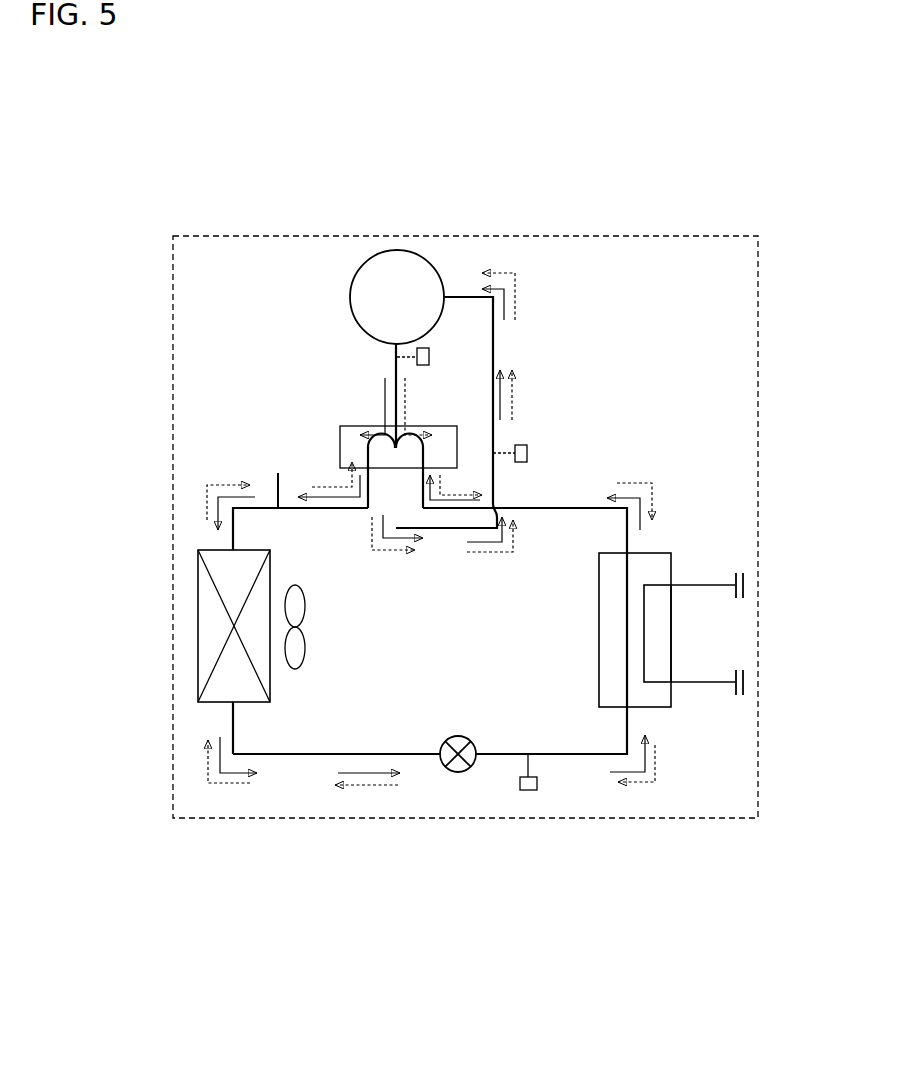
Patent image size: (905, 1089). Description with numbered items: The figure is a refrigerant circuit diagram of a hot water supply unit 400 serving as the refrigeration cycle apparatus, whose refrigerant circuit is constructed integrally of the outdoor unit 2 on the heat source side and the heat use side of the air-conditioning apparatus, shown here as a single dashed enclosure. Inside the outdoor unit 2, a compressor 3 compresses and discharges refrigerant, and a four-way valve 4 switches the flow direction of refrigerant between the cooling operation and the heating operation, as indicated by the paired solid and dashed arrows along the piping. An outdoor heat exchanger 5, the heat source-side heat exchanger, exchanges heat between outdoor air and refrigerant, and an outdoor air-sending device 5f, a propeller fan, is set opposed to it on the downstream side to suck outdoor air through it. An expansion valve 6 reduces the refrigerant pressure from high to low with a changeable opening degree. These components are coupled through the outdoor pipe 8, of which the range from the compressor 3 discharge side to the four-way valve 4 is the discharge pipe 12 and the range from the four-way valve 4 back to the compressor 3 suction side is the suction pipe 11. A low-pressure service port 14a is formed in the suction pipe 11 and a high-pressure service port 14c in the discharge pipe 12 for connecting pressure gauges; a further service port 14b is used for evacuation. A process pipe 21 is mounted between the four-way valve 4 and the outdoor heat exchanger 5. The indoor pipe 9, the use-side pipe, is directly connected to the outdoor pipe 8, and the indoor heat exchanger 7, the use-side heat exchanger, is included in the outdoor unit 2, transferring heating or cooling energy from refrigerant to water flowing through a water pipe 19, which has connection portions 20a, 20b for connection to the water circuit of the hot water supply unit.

The hot water supply unit 400 is at (259, 171).
The outdoor unit 2 is at (268, 822).
The compressor 3 is at (350, 290).
The four-way valve 4 is at (340, 432).
The outdoor heat exchanger 5 is at (198, 605).
The outdoor air-sending device 5f is at (305, 618).
The expansion valve 6 is at (462, 737).
The indoor heat exchanger 7 is at (660, 553).
The outdoor pipe 8 is at (312, 755).
The indoor pipe 9 is at (596, 755).
The suction pipe 11 is at (477, 297).
The discharge pipe 12 is at (393, 363).
The service port 14a is at (522, 444).
The service port 14b is at (526, 791).
The service port 14c is at (430, 356).
The water pipe 19 is at (700, 585).
The connection portion 20a is at (747, 675).
The connection portion 20b is at (747, 577).
The process pipe 21 is at (278, 473).